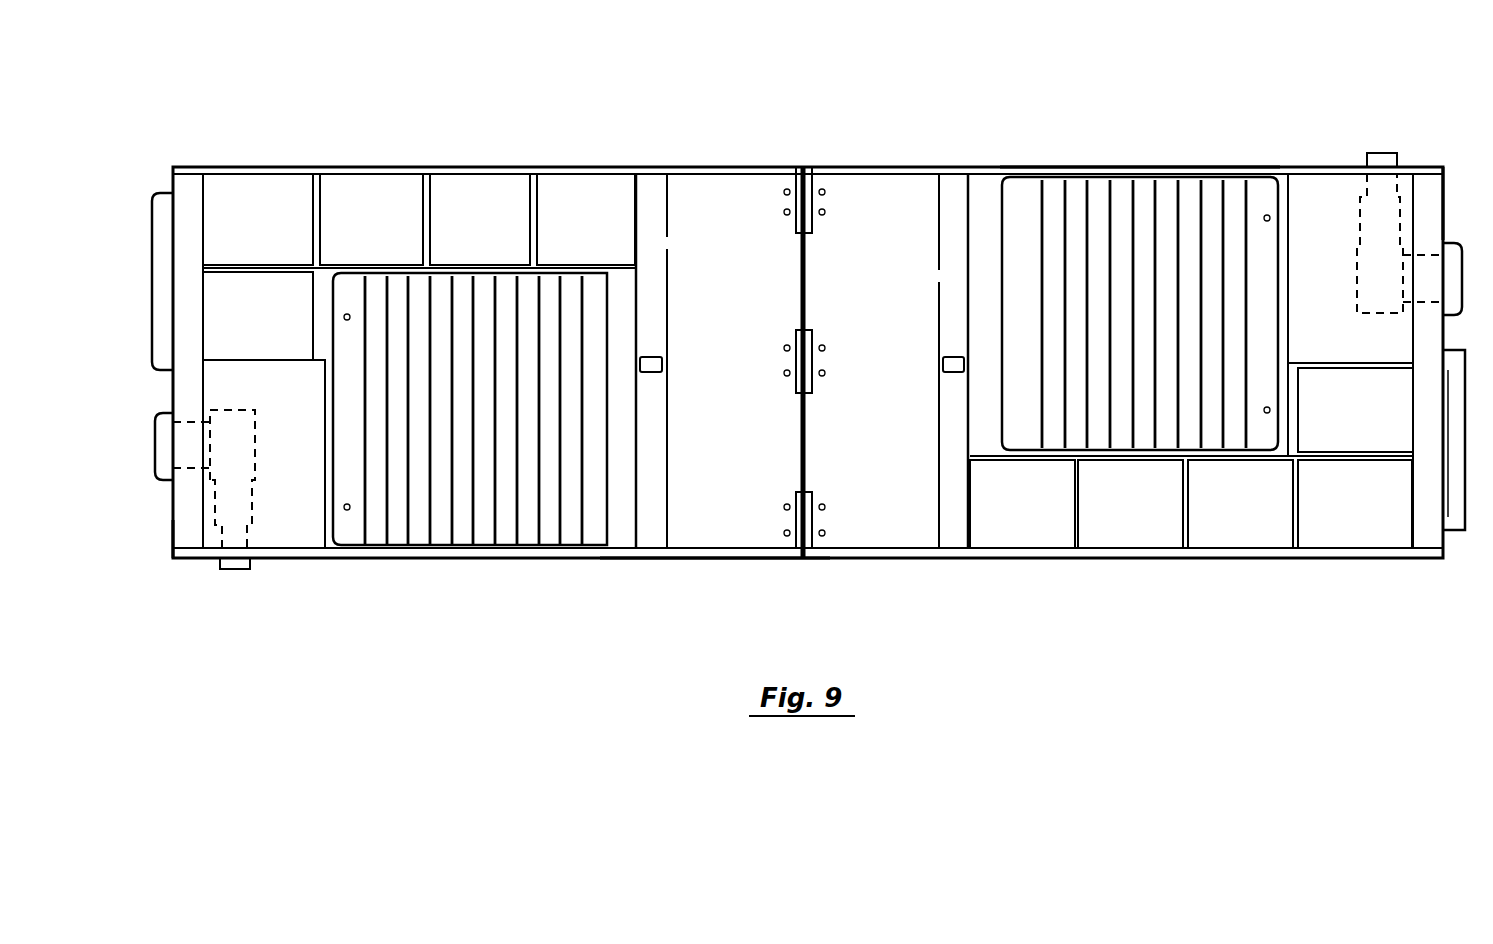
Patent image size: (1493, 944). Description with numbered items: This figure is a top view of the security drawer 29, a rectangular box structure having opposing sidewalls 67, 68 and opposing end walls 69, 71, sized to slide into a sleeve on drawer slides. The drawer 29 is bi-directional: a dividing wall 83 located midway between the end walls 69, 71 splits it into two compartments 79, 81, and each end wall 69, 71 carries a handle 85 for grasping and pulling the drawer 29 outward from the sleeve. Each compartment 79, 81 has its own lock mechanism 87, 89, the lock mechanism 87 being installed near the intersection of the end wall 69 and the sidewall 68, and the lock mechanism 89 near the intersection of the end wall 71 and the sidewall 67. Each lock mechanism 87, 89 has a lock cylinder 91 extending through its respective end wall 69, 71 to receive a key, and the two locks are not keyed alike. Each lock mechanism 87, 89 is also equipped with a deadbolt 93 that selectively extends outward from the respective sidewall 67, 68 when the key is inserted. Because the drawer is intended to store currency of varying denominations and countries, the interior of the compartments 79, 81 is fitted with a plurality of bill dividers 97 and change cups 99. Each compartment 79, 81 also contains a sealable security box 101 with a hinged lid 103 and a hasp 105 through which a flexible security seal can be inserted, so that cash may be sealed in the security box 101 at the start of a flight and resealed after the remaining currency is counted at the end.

The drawer 29 is at (296, 132).
The sidewall 67 is at (713, 560).
The sidewall 68 is at (1127, 166).
The end wall 69 is at (1450, 178).
The end wall 71 is at (172, 542).
The compartment 79 is at (1028, 200).
The compartment 81 is at (487, 190).
The dividing wall 83 is at (811, 185).
The handle 85 is at (157, 180).
The lock mechanism 87 is at (1357, 278).
The lock mechanism 89 is at (257, 452).
The lock cylinder 91 is at (160, 462).
The deadbolt 93 is at (234, 570).
The bill divider 97 is at (481, 303).
The change cup 99 is at (366, 214).
The security box 101 is at (695, 193).
The hinged lid 103 is at (748, 403).
The hasp 105 is at (651, 355).